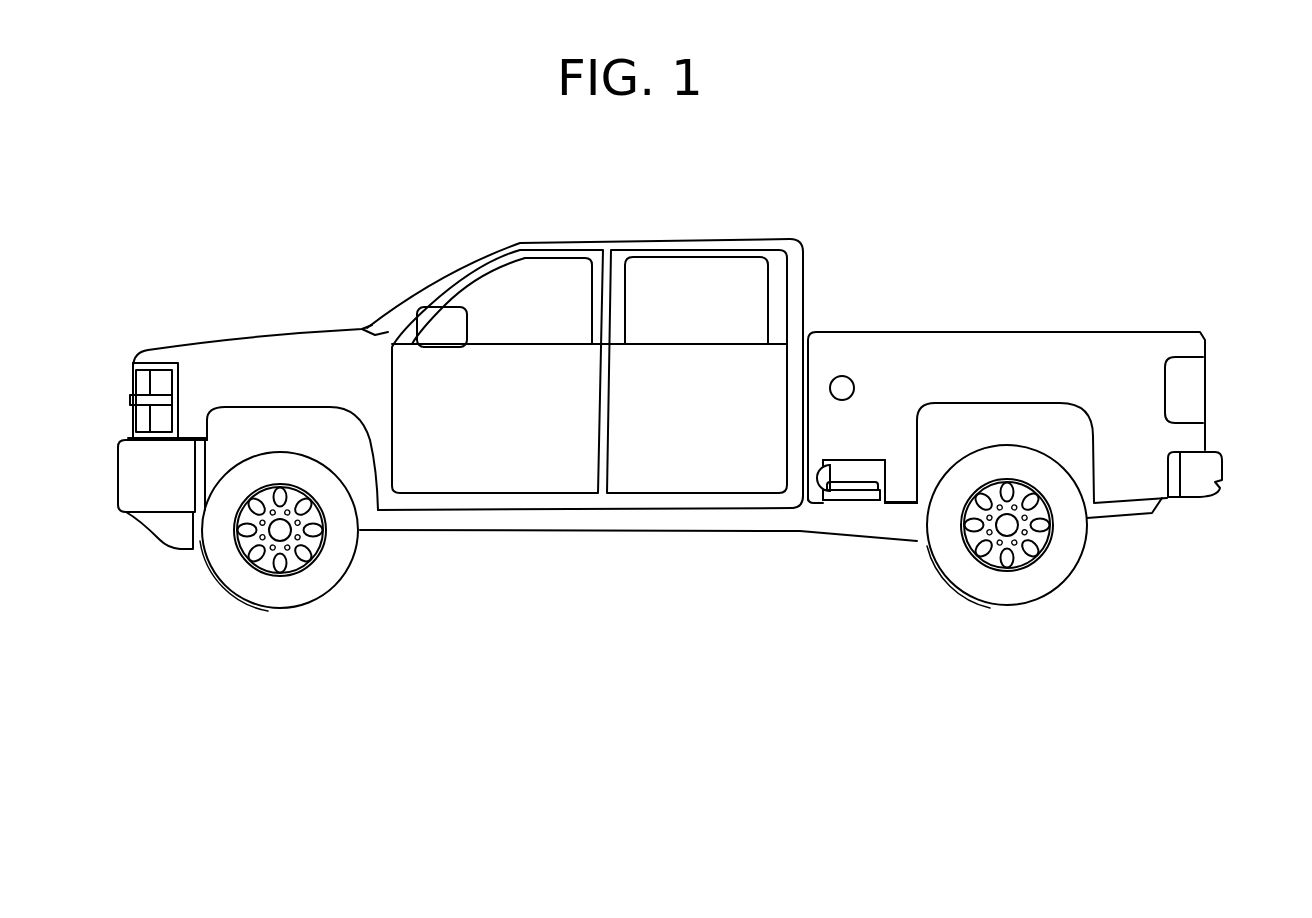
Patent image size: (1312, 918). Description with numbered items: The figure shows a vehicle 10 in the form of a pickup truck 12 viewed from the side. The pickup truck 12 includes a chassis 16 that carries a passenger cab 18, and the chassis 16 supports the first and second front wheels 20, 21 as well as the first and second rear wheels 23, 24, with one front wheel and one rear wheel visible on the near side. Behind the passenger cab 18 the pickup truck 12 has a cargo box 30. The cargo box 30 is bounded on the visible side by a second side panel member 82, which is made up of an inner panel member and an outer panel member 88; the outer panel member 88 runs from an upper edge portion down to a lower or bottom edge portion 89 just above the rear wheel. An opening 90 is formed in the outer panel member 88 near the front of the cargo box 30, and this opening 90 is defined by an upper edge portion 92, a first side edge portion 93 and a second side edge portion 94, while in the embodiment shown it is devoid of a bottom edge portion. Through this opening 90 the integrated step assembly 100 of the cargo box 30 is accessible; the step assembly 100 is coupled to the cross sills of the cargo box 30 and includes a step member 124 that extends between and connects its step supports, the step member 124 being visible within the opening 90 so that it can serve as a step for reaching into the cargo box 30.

The vehicle 10 is at (890, 690).
The pickup truck 12 is at (186, 333).
The chassis 16 is at (416, 540).
The passenger cab 18 is at (545, 236).
The first front wheel 20 is at (208, 566).
The second front wheel 21 is at (250, 592).
The first rear wheel 23 is at (1063, 563).
The second rear wheel 24 is at (928, 560).
The cargo box 30 is at (1047, 389).
The second side panel member 82 is at (1122, 416).
The outer panel member 88 is at (1117, 357).
The bottom edge portion 89 is at (898, 503).
The opening 90 is at (856, 482).
The upper edge portion 92 is at (842, 458).
The first side edge portion 93 is at (822, 467).
The second side edge portion 94 is at (888, 479).
The integrated step assembly 100 is at (793, 530).
The step member 124 is at (850, 512).